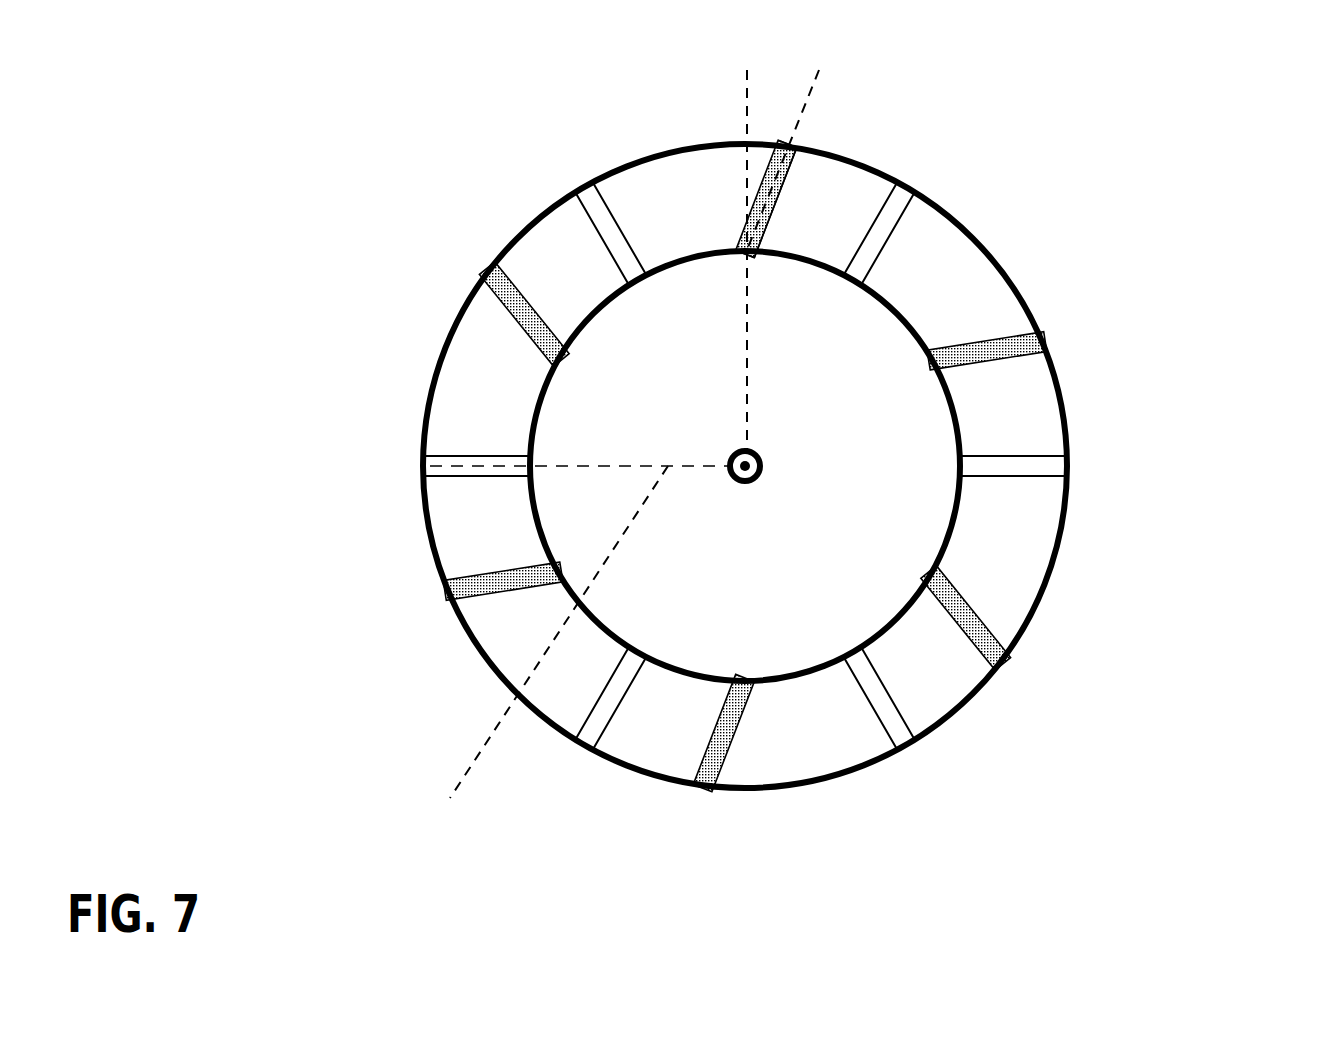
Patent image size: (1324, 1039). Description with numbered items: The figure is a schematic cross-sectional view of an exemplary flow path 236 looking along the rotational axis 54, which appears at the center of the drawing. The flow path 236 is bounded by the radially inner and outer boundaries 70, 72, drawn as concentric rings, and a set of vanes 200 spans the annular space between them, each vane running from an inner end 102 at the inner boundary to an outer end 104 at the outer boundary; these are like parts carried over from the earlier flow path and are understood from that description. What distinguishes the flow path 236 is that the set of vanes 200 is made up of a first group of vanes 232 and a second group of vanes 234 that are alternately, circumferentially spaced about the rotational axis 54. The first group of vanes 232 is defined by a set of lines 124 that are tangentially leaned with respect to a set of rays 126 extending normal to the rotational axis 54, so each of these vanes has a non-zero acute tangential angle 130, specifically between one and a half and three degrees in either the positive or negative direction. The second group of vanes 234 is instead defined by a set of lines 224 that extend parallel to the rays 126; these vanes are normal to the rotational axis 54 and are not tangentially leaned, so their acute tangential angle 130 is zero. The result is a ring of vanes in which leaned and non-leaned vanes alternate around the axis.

The rotational axis 54 is at (762, 467).
The inner ring 70 is at (535, 418).
The outer ring 72 is at (541, 214).
The spoke inner end 102 is at (763, 245).
The spoke outer end 104 is at (788, 142).
The set of lines 124 is at (819, 70).
The set of rays 126 is at (742, 95).
The acute tangential angle 130 is at (760, 198).
The set of vanes 200 is at (995, 328).
The set of lines 224 is at (446, 464).
The first group of vanes 232 is at (782, 200).
The second group of vanes 234 is at (885, 245).
The exemplary flow path 236 is at (331, 85).